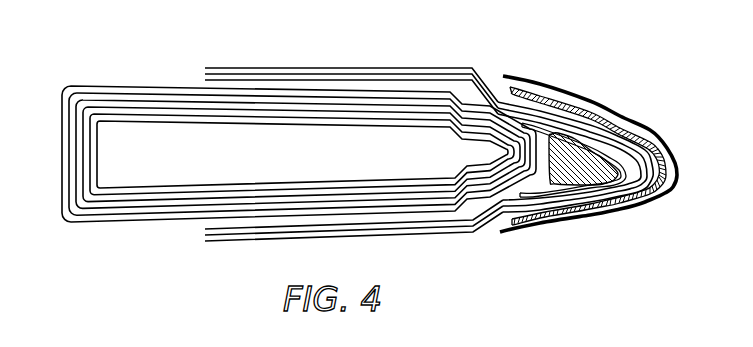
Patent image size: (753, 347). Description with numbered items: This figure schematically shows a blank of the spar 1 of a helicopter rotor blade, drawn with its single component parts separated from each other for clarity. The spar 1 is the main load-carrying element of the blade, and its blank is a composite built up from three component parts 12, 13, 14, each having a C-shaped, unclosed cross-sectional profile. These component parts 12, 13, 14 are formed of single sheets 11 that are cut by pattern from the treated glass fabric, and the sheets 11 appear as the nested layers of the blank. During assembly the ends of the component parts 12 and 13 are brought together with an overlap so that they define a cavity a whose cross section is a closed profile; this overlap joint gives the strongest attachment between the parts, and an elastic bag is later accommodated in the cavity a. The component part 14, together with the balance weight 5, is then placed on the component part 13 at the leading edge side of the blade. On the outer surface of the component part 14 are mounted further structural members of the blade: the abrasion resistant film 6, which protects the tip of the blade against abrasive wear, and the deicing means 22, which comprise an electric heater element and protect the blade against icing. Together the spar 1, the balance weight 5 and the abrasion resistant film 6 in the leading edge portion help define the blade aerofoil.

The spar 1 is at (313, 67).
The balance weight 5 is at (557, 186).
The abrasion resistant film 6 is at (625, 113).
The sheets 11 is at (176, 121).
The component part 12 is at (62, 194).
The component part 13 is at (461, 202).
The component part 14 is at (390, 238).
The deicing means 22 is at (574, 101).
The cavity a is at (185, 127).